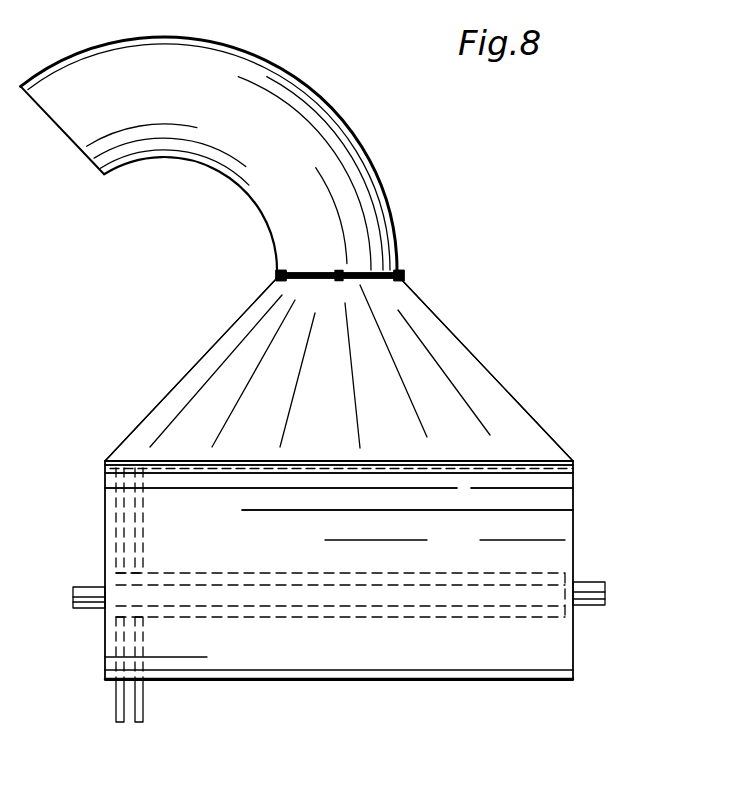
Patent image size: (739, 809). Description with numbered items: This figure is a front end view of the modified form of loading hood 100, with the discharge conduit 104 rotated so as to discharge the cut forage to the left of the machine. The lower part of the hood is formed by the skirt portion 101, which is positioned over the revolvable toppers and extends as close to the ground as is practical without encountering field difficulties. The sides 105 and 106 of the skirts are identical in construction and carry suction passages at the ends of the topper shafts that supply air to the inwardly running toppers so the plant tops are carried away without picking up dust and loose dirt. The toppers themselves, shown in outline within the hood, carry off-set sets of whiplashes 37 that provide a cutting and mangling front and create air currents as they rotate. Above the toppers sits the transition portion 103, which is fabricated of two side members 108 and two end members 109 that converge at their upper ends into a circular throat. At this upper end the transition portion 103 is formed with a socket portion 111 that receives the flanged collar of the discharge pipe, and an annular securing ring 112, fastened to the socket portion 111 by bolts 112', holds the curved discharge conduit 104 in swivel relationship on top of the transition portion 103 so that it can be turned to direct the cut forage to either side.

The discharge conduit 104 is at (265, 85).
The end member 109 is at (387, 312).
The annular securing ring 112 is at (263, 263).
The bolts 112' is at (422, 253).
The socket portion 111 is at (277, 276).
The transition portion 103 is at (443, 312).
The side member 108 is at (221, 340).
The modified hood 100 is at (501, 496).
The side of the skirt 105 is at (573, 480).
The lower skirt portion 101 is at (553, 494).
The side of the skirt 106 is at (116, 530).
The whiplashes 37 is at (116, 702).